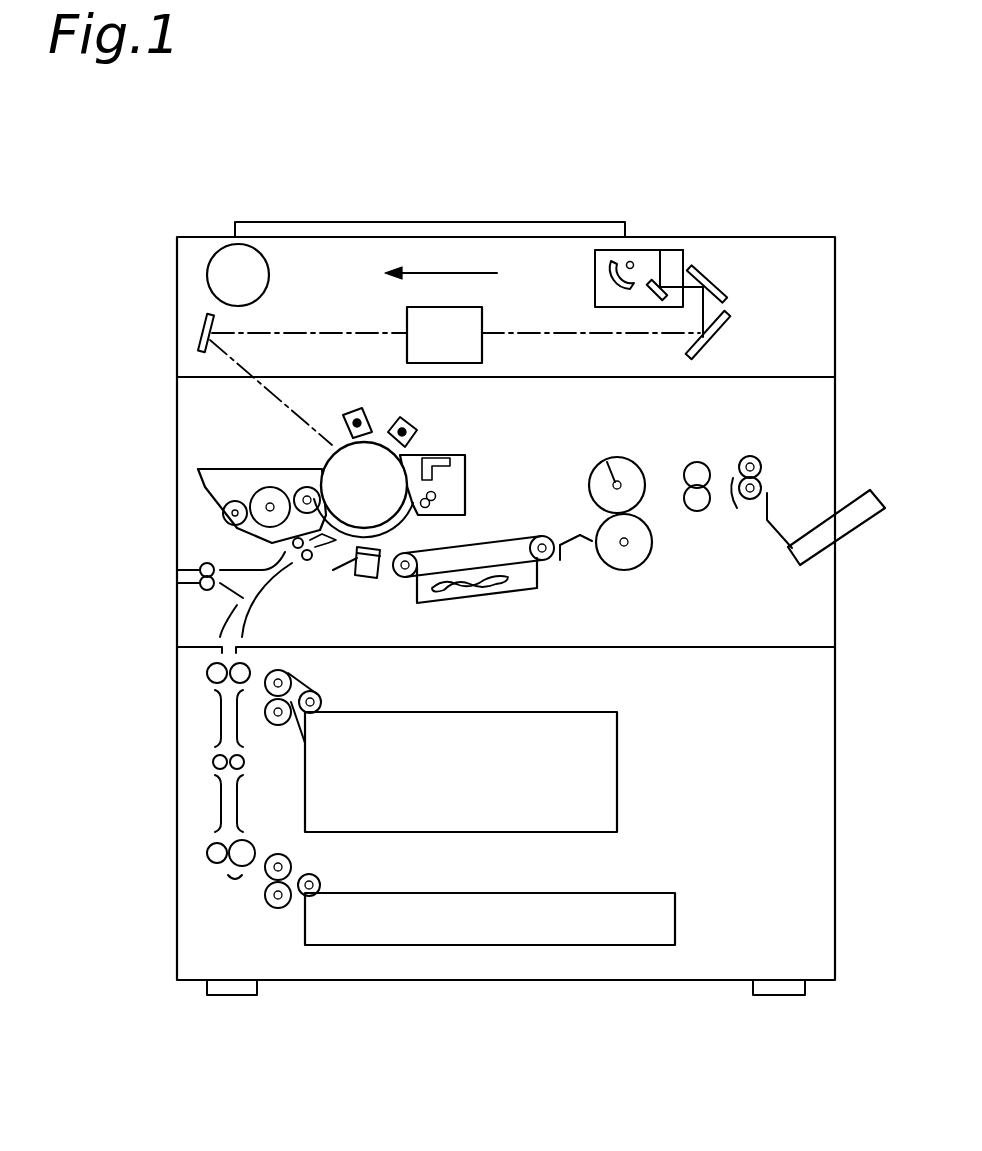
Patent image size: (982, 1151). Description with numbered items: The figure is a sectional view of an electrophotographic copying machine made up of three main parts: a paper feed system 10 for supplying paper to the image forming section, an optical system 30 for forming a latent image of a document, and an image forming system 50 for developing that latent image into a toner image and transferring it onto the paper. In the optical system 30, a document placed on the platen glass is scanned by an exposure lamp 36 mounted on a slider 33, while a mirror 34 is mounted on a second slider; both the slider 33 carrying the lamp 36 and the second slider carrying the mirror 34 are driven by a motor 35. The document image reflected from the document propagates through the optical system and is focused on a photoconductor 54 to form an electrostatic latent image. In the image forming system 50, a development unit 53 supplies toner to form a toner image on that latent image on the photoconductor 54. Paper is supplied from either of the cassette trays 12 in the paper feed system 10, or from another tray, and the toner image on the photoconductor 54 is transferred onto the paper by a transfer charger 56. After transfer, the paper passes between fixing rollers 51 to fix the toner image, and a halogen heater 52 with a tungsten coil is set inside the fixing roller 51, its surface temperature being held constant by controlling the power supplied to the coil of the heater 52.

The paper feed system 10 is at (166, 802).
The cassette trays 12 is at (617, 765).
The optical system 30 is at (443, 286).
The slider 33 is at (696, 243).
The mirror 34 is at (728, 275).
The motor 35 is at (222, 238).
The exposure lamp 36 is at (632, 262).
The image forming system 50 is at (466, 513).
The fixing rollers 51 is at (620, 476).
The halogen heater 52 is at (604, 461).
The development unit 53 is at (256, 468).
The photoconductor 54 is at (390, 458).
The transfer charger 56 is at (352, 577).